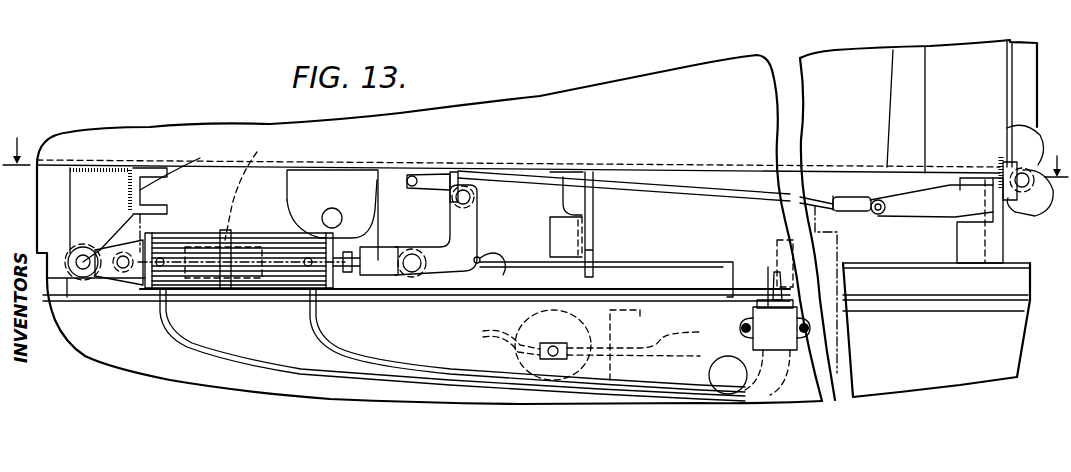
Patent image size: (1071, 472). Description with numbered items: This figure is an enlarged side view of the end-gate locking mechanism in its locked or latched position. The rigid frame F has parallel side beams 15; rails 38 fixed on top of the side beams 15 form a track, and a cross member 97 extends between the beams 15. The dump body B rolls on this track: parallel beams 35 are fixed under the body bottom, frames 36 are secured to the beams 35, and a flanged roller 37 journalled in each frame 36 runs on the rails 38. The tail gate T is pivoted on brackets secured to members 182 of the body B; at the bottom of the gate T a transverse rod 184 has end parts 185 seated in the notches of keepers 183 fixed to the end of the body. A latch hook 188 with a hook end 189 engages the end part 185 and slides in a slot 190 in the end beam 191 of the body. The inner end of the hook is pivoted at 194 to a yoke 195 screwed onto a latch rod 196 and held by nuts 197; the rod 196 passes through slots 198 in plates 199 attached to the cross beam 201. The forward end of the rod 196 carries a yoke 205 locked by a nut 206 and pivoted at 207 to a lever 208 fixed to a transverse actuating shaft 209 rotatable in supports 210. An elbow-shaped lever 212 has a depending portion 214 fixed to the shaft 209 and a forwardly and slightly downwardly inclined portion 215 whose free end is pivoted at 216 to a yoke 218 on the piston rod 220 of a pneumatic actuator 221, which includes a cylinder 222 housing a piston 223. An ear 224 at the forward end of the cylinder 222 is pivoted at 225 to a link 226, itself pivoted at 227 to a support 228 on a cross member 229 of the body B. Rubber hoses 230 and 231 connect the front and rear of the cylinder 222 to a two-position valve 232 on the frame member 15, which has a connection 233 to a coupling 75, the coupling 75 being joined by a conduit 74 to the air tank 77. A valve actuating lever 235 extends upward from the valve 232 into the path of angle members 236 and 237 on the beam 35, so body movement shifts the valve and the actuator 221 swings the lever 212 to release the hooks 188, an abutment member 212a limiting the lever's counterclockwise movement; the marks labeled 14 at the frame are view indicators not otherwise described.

The section line 14 is at (537, 145).
The side beam 15 is at (178, 367).
The beam 35 is at (680, 240).
The frame 36 is at (301, 183).
The flanged roller 37 is at (367, 227).
The rail 38 is at (636, 272).
The conduit 74 is at (490, 340).
The coupling 75 is at (553, 345).
The tank 77 is at (522, 328).
The cross member 97 is at (614, 373).
The member 182 is at (943, 55).
The keeper 183 is at (1008, 140).
The transverse rod 184 is at (1014, 198).
The end part 185 is at (1012, 130).
The latch hook 188 is at (945, 205).
The hook end 189 is at (1052, 214).
The slot 190 is at (980, 190).
The end beam 191 is at (985, 254).
The pivot 194 is at (876, 215).
The yoke 195 is at (855, 203).
The latch rod 196 is at (707, 193).
The nut 197 is at (833, 200).
The slot 198 is at (603, 180).
The plate 199 is at (596, 238).
The cross beam 201 is at (563, 200).
The yoke 205 is at (428, 176).
The nut 206 is at (455, 182).
The pivot 207 is at (412, 174).
The lever 208 is at (440, 193).
The actuating shaft 209 is at (476, 197).
The support 210 is at (468, 173).
The elbow-shaped lever 212 is at (483, 228).
The abutment member 212a is at (509, 271).
The portion 214 is at (457, 214).
The portion 215 is at (443, 268).
The pivot 216 is at (412, 256).
The yoke 218 is at (391, 265).
The piston rod 220 is at (351, 262).
The pneumatic actuator 221 is at (255, 229).
The cylinder 222 is at (268, 290).
The piston 223 is at (213, 218).
The ear 224 is at (138, 280).
The pivot 225 is at (120, 270).
The link 226 is at (98, 280).
The pivot 227 is at (76, 250).
The support 228 is at (96, 182).
The cross member 229 is at (180, 163).
The rubber hose 230 is at (200, 347).
The rubber hose 231 is at (341, 360).
The valve 232 is at (797, 334).
The connection 233 is at (700, 336).
The valve actuating lever 235 is at (768, 294).
The angle member 236 is at (253, 186).
The angle member 237 is at (799, 265).
The dump body B is at (813, 67).
The tail gate T is at (1023, 52).
The frame F is at (108, 373).